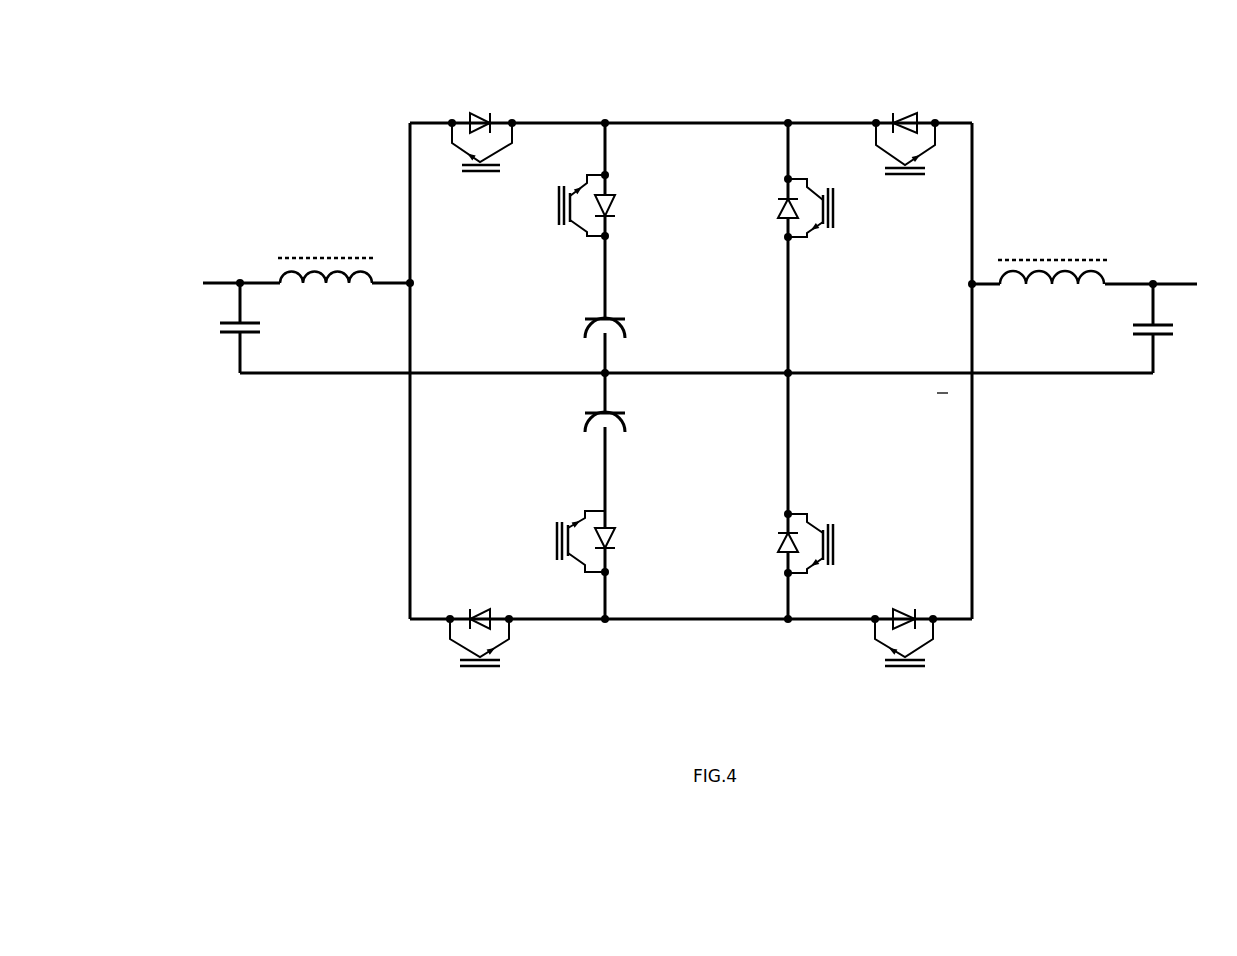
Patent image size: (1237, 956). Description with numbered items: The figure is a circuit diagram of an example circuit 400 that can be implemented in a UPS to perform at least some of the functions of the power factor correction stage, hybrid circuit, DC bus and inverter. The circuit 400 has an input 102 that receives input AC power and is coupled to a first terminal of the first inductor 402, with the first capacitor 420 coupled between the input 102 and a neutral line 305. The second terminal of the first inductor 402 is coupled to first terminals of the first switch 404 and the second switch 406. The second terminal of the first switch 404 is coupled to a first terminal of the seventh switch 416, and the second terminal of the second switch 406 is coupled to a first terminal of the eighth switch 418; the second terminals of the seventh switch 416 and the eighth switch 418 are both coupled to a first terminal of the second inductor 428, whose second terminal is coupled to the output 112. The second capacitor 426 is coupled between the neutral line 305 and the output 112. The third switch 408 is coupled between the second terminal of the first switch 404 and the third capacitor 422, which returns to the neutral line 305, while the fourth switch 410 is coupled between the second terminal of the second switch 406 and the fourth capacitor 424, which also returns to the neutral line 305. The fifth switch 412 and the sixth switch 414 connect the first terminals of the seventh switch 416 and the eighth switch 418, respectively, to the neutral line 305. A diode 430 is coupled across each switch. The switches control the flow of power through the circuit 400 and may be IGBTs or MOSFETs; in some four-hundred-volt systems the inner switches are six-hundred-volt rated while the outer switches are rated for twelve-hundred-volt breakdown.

The circuit 400 is at (252, 98).
The input 102 is at (228, 250).
The output 112 is at (1160, 262).
The neutral line 305 is at (498, 372).
The inductor L1 402 is at (327, 255).
The switch S1 404 is at (466, 176).
The switch S2 406 is at (497, 656).
The switch S3 408 is at (556, 226).
The switch S4 410 is at (556, 521).
The switch S5 412 is at (838, 232).
The switch S6 414 is at (835, 523).
The switch S7 416 is at (918, 185).
The switch S8 418 is at (920, 657).
The capacitor C1 420 is at (236, 337).
The capacitor C3 422 is at (612, 318).
The capacitor C4 424 is at (603, 411).
The capacitor C2 426 is at (1158, 336).
The inductor L2 428 is at (1043, 258).
The diode 430 is at (470, 120).